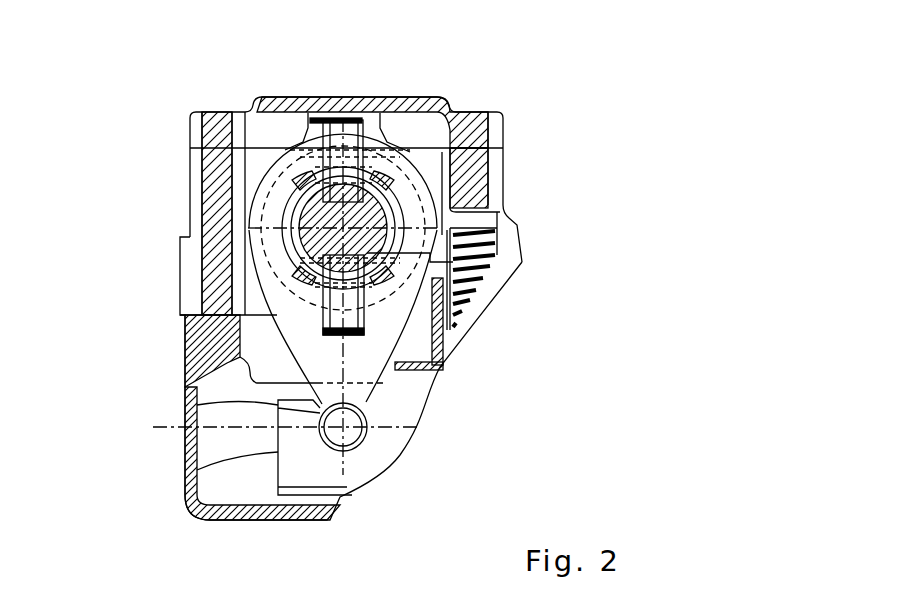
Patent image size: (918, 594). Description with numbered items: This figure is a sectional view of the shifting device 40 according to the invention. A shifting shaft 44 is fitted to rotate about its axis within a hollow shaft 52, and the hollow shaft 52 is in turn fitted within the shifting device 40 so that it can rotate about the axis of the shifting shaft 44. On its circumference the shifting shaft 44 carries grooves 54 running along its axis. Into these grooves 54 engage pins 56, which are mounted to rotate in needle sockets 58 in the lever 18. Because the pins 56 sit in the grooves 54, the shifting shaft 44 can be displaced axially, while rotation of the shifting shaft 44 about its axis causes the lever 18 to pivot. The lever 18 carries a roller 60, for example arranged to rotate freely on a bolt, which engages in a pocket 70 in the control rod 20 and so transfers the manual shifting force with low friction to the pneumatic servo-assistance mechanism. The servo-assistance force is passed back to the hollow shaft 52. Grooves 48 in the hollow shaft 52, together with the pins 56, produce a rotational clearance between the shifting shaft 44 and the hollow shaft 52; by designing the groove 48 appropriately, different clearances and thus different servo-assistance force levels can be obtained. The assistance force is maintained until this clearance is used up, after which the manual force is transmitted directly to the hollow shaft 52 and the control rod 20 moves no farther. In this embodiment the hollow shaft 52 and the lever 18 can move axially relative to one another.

The lever 18 is at (368, 168).
The control rod 20 is at (292, 447).
The shifting device 40 is at (478, 127).
The shifting shaft 44 is at (293, 213).
The grooves in the hollow shaft 48 is at (305, 150).
The hollow shaft 52 is at (292, 152).
The grooves 54 is at (455, 135).
The pins 56 is at (366, 118).
The needle sockets 58 is at (305, 118).
The roller 60 is at (272, 403).
The pocket 70 is at (280, 444).